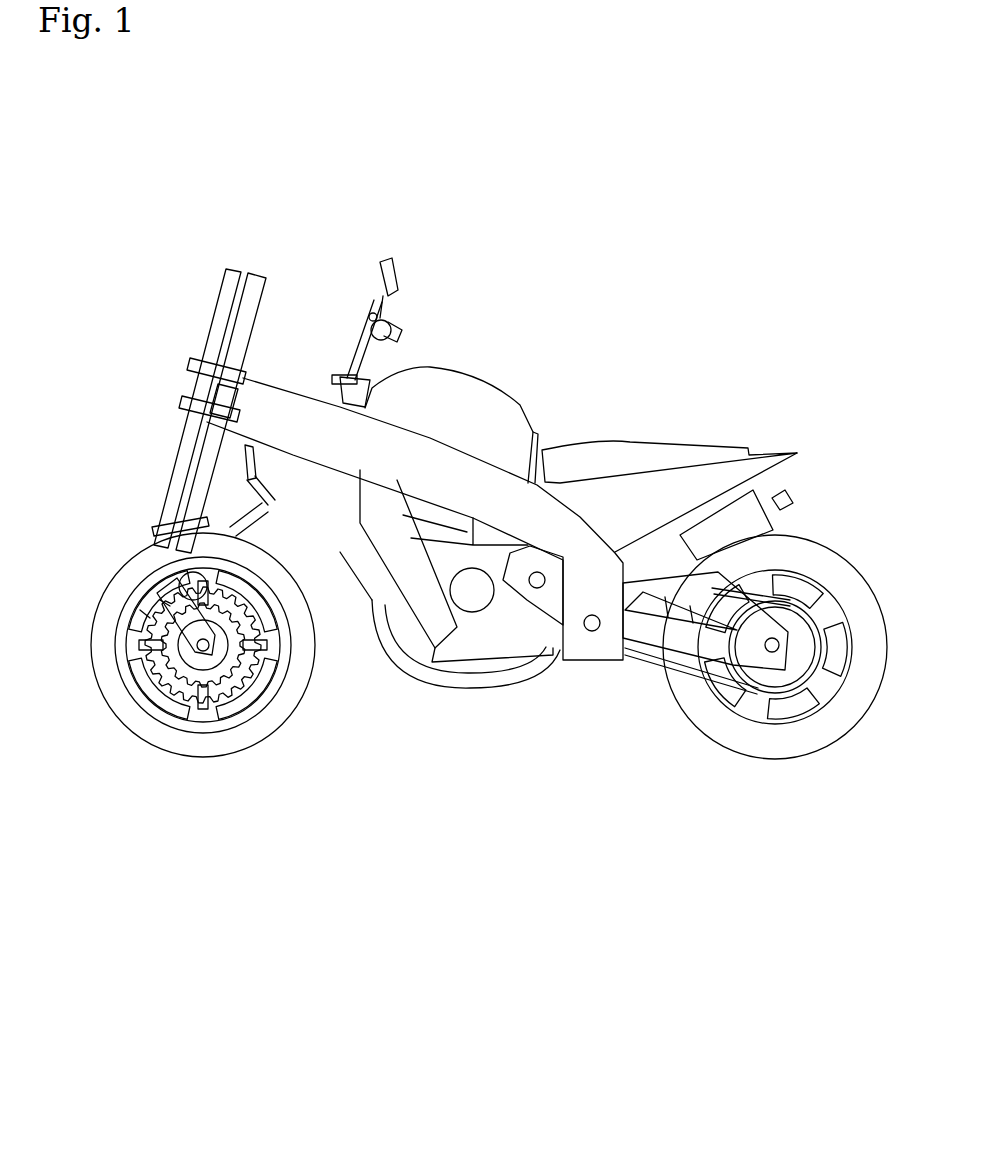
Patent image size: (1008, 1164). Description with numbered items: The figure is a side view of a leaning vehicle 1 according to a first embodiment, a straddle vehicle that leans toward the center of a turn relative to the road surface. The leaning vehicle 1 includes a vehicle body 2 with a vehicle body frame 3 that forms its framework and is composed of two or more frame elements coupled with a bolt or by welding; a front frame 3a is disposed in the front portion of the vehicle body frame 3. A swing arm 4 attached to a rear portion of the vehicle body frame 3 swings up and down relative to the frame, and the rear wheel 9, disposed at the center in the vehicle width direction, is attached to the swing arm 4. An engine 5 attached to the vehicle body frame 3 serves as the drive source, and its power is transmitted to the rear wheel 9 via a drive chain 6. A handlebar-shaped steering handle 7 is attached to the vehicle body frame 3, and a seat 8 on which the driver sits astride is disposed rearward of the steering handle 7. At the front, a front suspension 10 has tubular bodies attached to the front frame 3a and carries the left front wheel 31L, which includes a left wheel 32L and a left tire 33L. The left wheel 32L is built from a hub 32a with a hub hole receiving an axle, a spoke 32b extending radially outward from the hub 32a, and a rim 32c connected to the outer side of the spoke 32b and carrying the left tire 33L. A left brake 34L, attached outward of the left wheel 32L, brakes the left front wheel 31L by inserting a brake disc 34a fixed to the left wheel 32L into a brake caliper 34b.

The leaning vehicle 1 is at (806, 190).
The vehicle body 2 is at (495, 765).
The vehicle body frame 3 is at (415, 455).
The front frame 3a is at (290, 405).
The swing arm 4 is at (640, 638).
The engine 5 is at (510, 620).
The drive chain 6 is at (673, 688).
The steering handle 7 is at (398, 300).
The seat 8 is at (597, 455).
The rear wheel 9 is at (780, 795).
The front suspension 10 is at (170, 385).
The left front wheel 31L is at (253, 748).
The left wheel 32L is at (213, 730).
The hub 32a is at (173, 714).
The spoke 32b is at (208, 707).
The rim 32c is at (258, 702).
The left tire 33L is at (310, 665).
The left brake 34L is at (126, 500).
The brake disc 34a is at (150, 615).
The brake caliper 34b is at (175, 583).